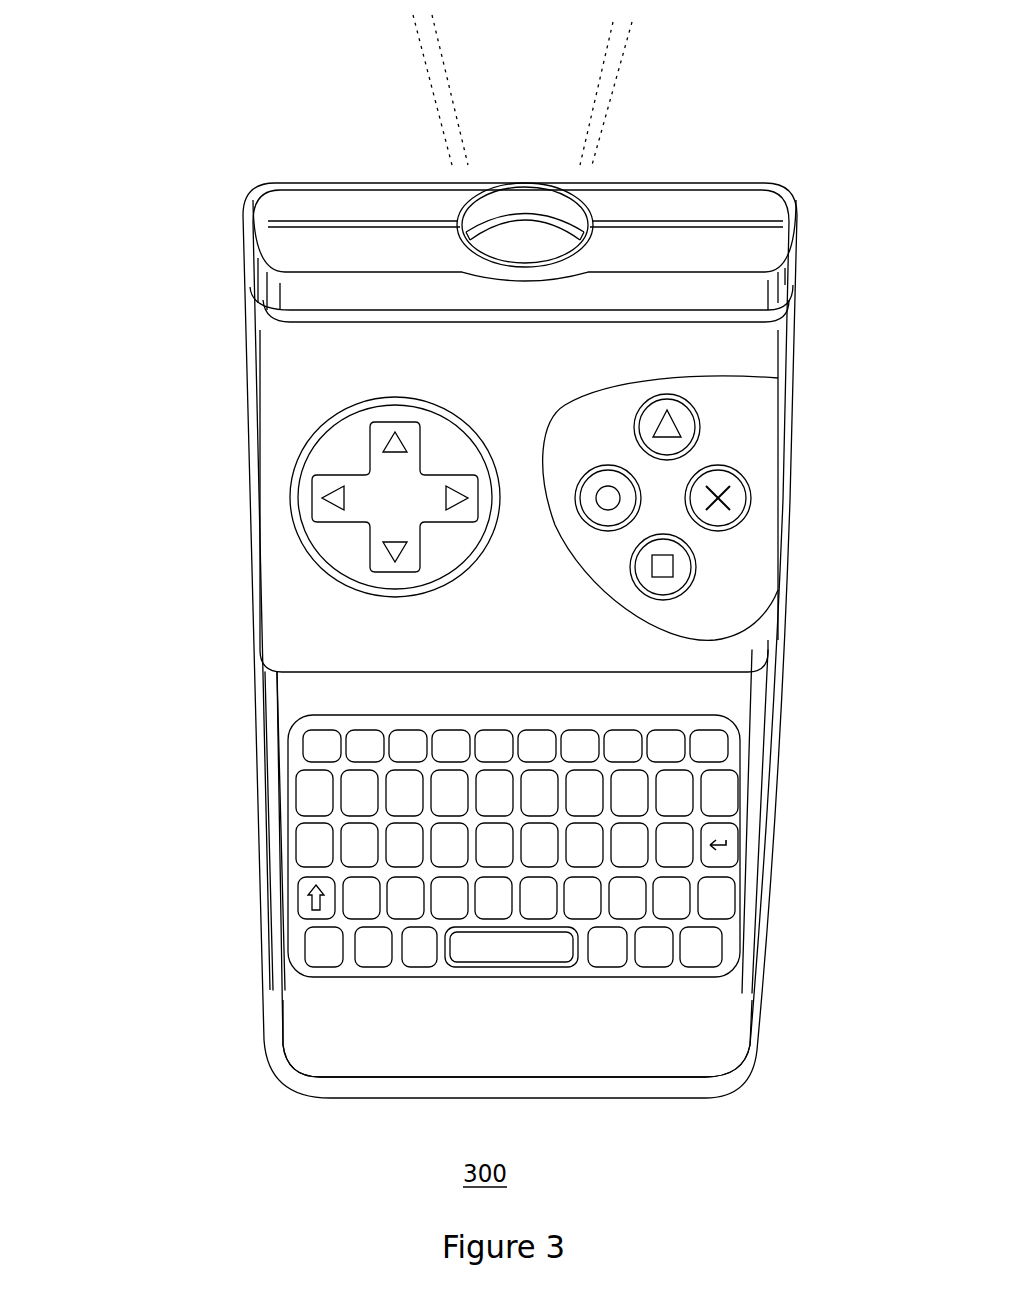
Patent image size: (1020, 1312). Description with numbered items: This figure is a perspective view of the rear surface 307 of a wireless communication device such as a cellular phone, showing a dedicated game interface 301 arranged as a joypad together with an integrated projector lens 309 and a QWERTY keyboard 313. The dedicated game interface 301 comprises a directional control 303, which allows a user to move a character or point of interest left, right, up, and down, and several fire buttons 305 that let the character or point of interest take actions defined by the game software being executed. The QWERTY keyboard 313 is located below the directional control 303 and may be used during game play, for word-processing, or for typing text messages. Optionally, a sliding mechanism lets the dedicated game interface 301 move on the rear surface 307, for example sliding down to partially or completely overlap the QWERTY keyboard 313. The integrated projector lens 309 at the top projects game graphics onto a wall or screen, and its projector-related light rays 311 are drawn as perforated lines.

The dedicated game interface 301 is at (285, 394).
The directional control 303 is at (330, 537).
The fire buttons 305 is at (716, 431).
The rear surface 307 is at (601, 1045).
The integrated projector lens 309 is at (524, 242).
The projector-related light rays 311 is at (412, 62).
The QWERTY keyboard 313 is at (305, 963).